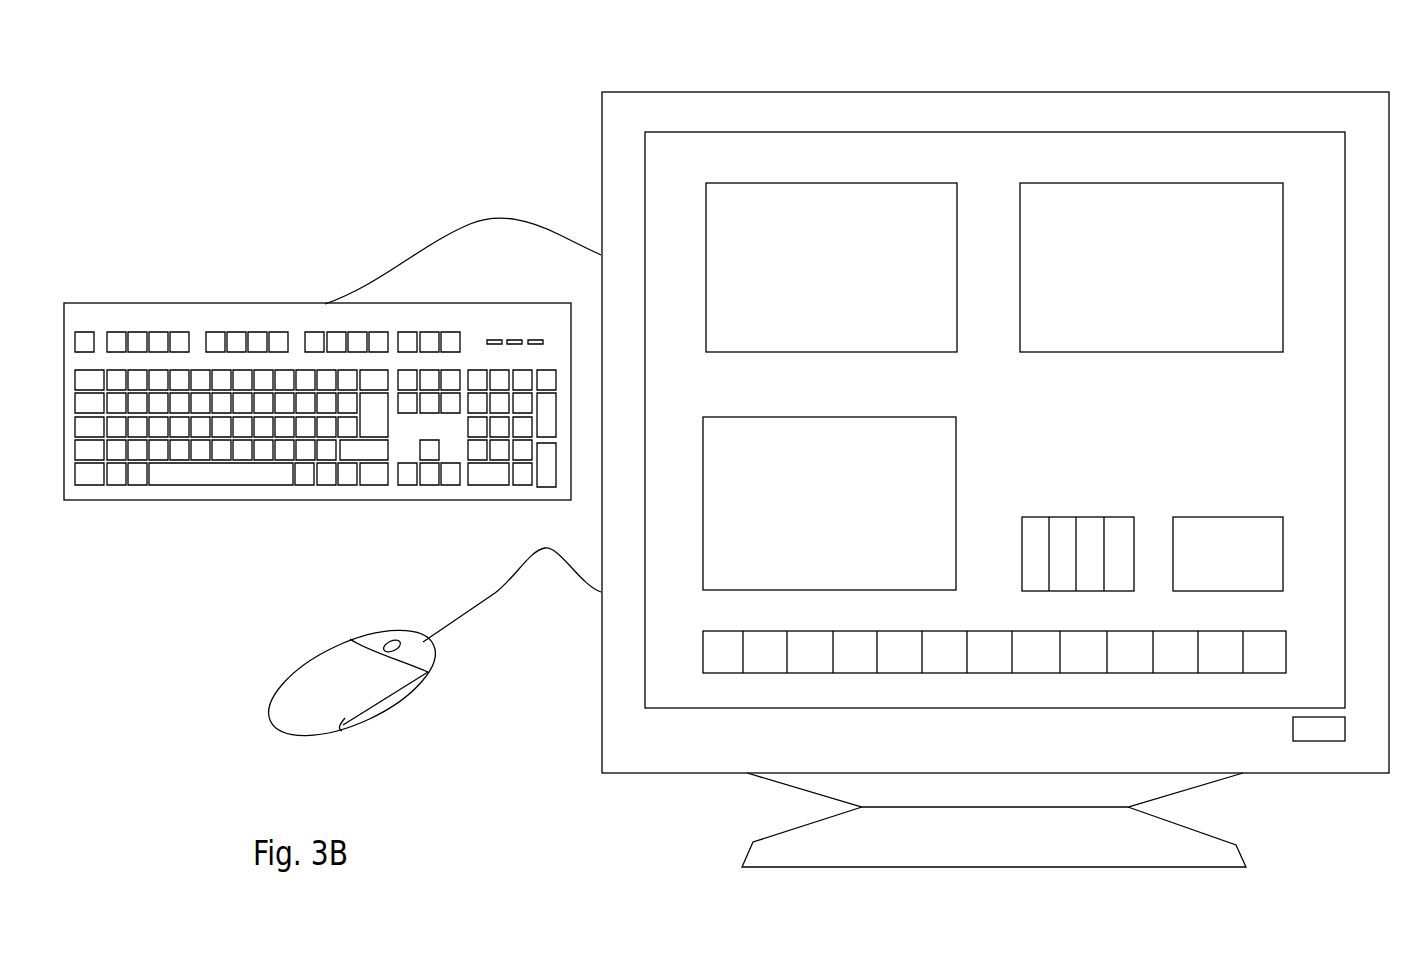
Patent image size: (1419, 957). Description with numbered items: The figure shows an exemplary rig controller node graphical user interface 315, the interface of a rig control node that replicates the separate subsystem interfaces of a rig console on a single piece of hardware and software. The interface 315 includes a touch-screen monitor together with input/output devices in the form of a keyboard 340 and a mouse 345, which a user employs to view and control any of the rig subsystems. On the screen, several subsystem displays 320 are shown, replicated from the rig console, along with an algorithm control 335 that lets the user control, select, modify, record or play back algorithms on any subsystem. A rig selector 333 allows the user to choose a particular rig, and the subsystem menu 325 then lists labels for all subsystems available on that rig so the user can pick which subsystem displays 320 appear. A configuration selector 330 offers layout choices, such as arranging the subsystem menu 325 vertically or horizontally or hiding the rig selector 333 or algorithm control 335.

The rig controller node graphical user interface 315 is at (390, 49).
The subsystem display 320 is at (994, 267).
The subsystem menu 325 is at (1250, 631).
The configuration selector 330 is at (1203, 517).
The rig selector 333 is at (1061, 517).
The algorithm control 335 is at (829, 503).
The keyboard 340 is at (182, 303).
The mouse 345 is at (329, 640).